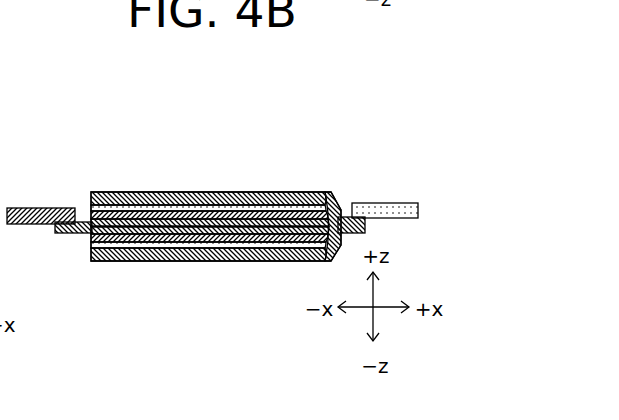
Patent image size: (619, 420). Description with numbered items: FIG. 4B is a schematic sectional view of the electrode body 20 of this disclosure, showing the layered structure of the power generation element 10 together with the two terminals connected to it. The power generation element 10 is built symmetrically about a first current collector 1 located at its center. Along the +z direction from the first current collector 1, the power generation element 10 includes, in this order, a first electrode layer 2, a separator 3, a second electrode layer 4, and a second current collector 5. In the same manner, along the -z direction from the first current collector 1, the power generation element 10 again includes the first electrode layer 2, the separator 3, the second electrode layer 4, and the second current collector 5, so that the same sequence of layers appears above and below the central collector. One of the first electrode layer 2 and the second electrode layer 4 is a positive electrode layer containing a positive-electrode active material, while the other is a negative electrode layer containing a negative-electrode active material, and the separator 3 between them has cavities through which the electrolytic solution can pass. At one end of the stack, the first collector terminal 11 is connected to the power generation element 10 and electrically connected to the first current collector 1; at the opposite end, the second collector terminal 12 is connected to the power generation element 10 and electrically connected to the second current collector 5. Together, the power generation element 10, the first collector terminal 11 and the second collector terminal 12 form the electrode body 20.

The first current collector 1 is at (113, 226).
The first electrode layer 2 is at (145, 222).
The separator 3 is at (185, 214).
The second electrode layer 4 is at (220, 208).
The second current collector 5 is at (255, 197).
The power generation element 10 is at (90, 132).
The first collector terminal 11 is at (33, 208).
The second collector terminal 12 is at (377, 203).
The electrode body 20 is at (306, 94).